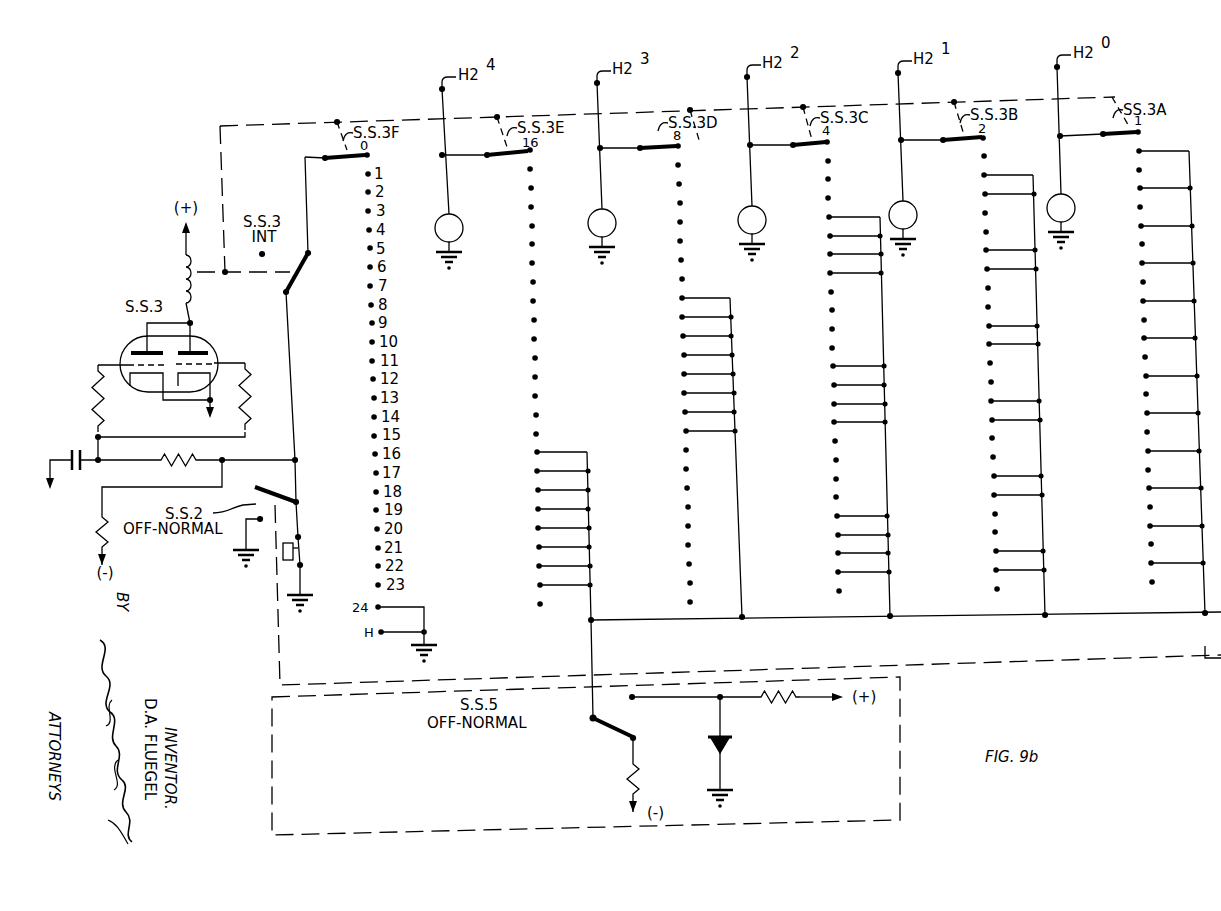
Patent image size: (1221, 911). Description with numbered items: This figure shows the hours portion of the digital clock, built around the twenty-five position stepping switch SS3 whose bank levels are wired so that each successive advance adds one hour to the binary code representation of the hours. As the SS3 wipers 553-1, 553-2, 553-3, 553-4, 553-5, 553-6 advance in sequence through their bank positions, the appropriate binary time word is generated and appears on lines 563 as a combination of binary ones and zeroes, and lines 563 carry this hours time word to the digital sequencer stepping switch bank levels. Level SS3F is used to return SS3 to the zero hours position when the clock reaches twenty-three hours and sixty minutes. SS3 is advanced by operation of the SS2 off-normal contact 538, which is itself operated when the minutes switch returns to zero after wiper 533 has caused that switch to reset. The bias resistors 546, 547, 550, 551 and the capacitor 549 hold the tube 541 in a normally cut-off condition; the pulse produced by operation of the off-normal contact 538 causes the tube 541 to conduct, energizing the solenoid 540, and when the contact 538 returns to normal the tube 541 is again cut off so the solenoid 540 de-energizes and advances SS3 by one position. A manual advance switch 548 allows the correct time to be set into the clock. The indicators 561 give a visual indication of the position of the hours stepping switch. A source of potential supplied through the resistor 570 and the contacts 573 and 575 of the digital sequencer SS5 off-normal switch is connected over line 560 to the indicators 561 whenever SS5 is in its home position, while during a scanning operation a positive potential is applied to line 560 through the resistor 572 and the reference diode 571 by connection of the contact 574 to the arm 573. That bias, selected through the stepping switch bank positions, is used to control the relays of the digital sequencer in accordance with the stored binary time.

The solenoid 540 is at (180, 264).
The tube 541 is at (120, 350).
The bias resistor 546 is at (94, 373).
The bias resistor 547 is at (262, 368).
The capacitor 549 is at (72, 448).
The bias resistor 550 is at (98, 515).
The bias resistor 551 is at (191, 459).
The SS2 off-normal contact 538 is at (281, 489).
The manual advance switch 548 is at (298, 551).
The SS3 wiper 553-1 is at (354, 162).
The SS3 wiper 553-2 is at (507, 159).
The SS3 wiper 553-3 is at (658, 154).
The SS3 wiper 553-4 is at (813, 149).
The SS3 wiper 553-5 is at (964, 145).
The SS3 wiper 553-6 is at (1122, 139).
The indicators 561 is at (453, 220).
The lines 563 is at (597, 93).
The line 560 is at (860, 622).
The wiper 533 is at (1200, 645).
The resistor 570 is at (632, 762).
The reference diode 571 is at (725, 748).
The resistor 572 is at (782, 703).
The arm of SS5 off-normal switch 573 is at (604, 730).
The contact 574 is at (636, 700).
The contact 575 is at (610, 752).